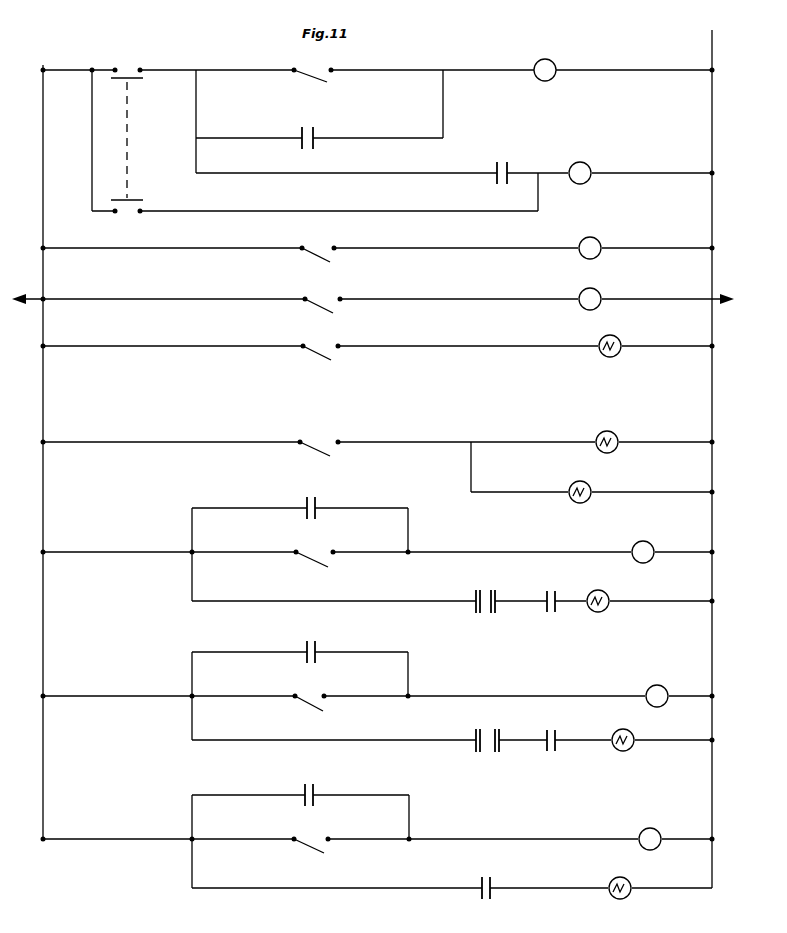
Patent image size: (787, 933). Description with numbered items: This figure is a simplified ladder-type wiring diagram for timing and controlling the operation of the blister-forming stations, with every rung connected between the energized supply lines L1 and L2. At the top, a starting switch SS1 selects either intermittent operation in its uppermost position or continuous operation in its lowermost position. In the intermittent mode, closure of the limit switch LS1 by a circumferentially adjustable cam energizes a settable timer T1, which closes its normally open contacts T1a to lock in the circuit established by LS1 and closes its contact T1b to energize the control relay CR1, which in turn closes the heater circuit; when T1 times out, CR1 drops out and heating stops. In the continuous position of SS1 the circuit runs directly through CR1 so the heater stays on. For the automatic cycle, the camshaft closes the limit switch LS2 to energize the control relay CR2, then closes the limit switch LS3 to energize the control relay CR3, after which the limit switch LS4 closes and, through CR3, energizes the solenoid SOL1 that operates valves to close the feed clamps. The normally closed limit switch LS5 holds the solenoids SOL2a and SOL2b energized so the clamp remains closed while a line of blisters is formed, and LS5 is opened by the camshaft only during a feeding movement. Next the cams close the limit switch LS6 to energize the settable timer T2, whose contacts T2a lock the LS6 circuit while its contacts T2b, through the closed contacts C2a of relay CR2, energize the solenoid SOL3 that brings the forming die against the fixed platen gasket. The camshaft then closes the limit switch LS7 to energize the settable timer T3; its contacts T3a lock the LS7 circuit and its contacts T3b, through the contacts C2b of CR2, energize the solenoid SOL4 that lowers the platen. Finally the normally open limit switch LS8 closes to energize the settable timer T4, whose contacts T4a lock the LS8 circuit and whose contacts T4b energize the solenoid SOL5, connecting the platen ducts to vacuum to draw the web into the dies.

The line L1 is at (38, 441).
The line L2 is at (723, 454).
The starting switch SS1 is at (294, 134).
The limit switch LS1 is at (313, 66).
The settable timer T1 is at (552, 66).
The normally open contacts of timer T1 T1a is at (322, 132).
The normally open contact of timer T1 T1b is at (502, 166).
The control relay CR1 is at (586, 169).
The limit switch LS2 is at (318, 245).
The control relay CR2 is at (596, 243).
The limit switch LS3 is at (323, 296).
The control relay CR3 is at (596, 294).
The limit switch LS4 is at (321, 343).
The solenoid SOL1 is at (631, 340).
The limit switch LS5 is at (319, 439).
The solenoid SOL2a is at (632, 436).
The solenoid SOL2b is at (608, 486).
The normally open contacts of timer T2 T2a is at (320, 501).
The limit switch LS6 is at (315, 549).
The settable timer T2 is at (650, 547).
The normally open contacts of timer T2 T2b is at (486, 592).
The contacts of relay CR2 C2a is at (552, 591).
The solenoid SOL3 is at (618, 595).
The normally open contacts of timer T3 T3a is at (317, 645).
The limit switch LS7 is at (310, 693).
The settable timer T3 is at (657, 696).
The normally open contacts of timer T3 T3b is at (486, 731).
The contacts of relay CR2 C2b is at (553, 730).
The solenoid SOL4 is at (643, 734).
The normally open contacts of timer T4 T4a is at (317, 788).
The limit switch LS8 is at (311, 836).
The settable timer T4 is at (650, 839).
The normally open contacts of timer T4 T4b is at (492, 878).
The solenoid SOL5 is at (640, 882).